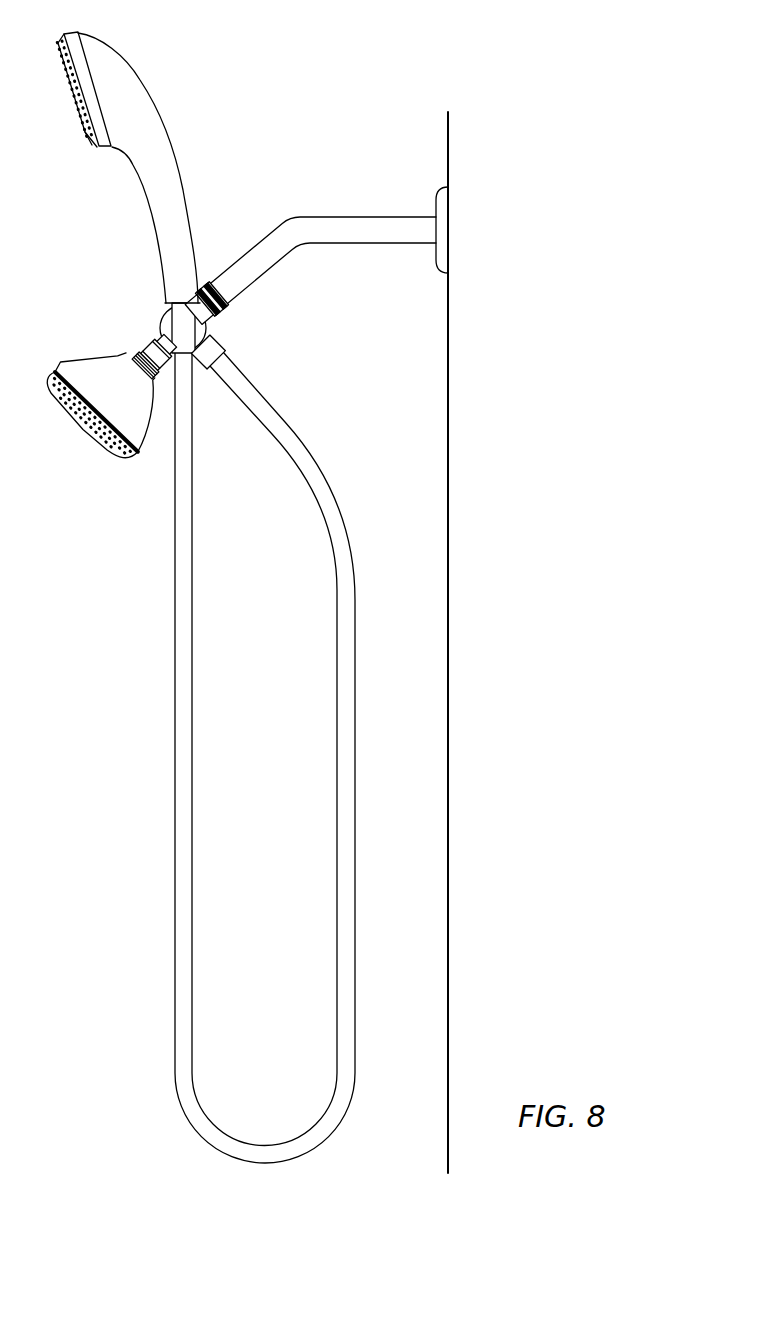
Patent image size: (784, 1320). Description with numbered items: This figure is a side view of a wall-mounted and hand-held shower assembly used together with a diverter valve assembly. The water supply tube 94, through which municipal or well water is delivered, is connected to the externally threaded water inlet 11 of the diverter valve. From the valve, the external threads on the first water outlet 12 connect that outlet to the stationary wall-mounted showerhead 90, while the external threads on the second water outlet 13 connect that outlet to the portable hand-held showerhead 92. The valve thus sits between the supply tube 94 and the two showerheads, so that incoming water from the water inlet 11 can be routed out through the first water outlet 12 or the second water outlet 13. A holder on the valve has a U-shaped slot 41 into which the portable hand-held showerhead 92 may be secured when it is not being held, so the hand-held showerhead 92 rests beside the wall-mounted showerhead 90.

The portable hand-held showerhead 92 is at (142, 127).
The water supply tube 94 is at (337, 228).
The U-shaped slot 41 is at (160, 318).
The water inlet 11 is at (213, 317).
The first water outlet 12 is at (160, 338).
The second water outlet 13 is at (207, 329).
The stationary wall-mounted showerhead 90 is at (110, 408).